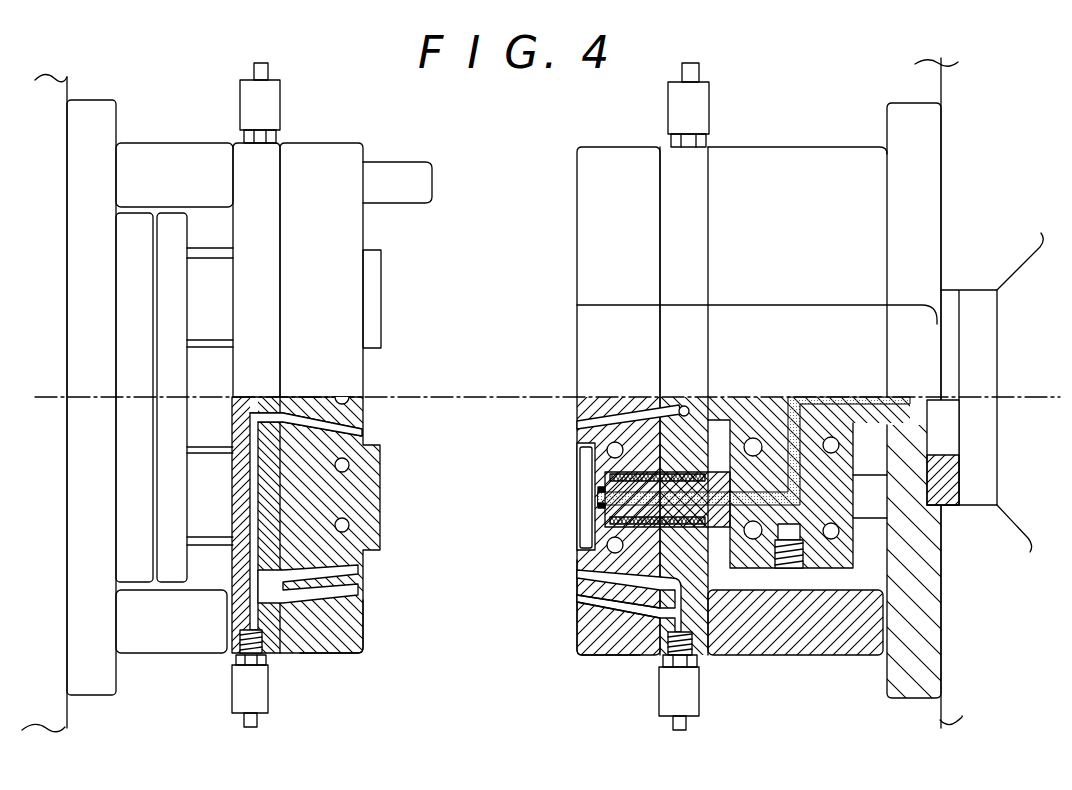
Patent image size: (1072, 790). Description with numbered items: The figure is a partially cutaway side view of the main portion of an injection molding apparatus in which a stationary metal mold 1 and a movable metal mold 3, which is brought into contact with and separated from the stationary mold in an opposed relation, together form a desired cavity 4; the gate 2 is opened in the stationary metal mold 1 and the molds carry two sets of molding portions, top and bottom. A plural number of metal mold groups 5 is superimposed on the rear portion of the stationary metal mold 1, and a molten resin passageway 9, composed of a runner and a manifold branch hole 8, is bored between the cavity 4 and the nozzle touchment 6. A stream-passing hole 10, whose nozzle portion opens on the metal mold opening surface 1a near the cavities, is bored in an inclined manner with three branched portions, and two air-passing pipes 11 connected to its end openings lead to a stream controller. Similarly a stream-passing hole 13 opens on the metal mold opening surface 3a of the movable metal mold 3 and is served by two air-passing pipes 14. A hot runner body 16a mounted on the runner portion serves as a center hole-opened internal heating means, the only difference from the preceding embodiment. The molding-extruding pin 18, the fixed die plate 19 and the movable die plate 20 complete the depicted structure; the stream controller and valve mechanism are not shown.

The stationary metal mold 1 is at (577, 424).
The metal mold opening surface 1a is at (573, 563).
The gate 2 is at (597, 494).
The movable metal mold 3 is at (373, 275).
The metal mold opening surface 3a is at (362, 640).
The cavity 4 is at (580, 456).
The metal mold groups 5 is at (773, 291).
The nozzle touchment 6 is at (930, 403).
The manifold branch hole 8 is at (797, 402).
The molten resin passageway 9 is at (787, 560).
The stream-passing hole 10 is at (623, 413).
The air-passing pipes 11 is at (693, 75).
The stream-passing hole 13 is at (327, 423).
The air-passing pipes 14 is at (267, 72).
The hot runner body 16a is at (684, 476).
The molding-extruding pin 18 is at (205, 340).
The fixed die plate 19 is at (938, 63).
The movable die plate 20 is at (50, 97).